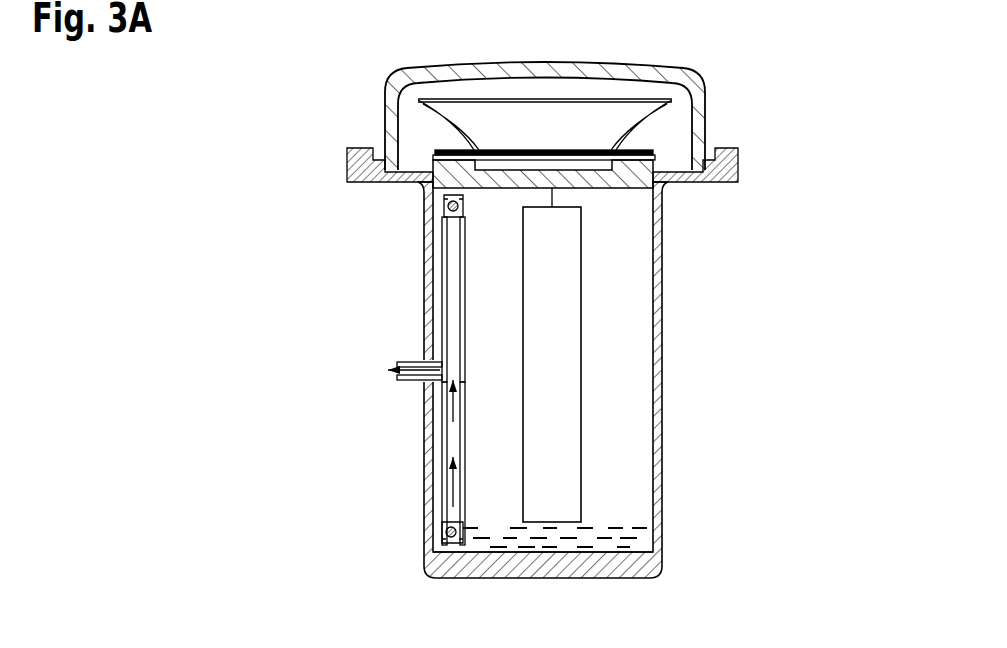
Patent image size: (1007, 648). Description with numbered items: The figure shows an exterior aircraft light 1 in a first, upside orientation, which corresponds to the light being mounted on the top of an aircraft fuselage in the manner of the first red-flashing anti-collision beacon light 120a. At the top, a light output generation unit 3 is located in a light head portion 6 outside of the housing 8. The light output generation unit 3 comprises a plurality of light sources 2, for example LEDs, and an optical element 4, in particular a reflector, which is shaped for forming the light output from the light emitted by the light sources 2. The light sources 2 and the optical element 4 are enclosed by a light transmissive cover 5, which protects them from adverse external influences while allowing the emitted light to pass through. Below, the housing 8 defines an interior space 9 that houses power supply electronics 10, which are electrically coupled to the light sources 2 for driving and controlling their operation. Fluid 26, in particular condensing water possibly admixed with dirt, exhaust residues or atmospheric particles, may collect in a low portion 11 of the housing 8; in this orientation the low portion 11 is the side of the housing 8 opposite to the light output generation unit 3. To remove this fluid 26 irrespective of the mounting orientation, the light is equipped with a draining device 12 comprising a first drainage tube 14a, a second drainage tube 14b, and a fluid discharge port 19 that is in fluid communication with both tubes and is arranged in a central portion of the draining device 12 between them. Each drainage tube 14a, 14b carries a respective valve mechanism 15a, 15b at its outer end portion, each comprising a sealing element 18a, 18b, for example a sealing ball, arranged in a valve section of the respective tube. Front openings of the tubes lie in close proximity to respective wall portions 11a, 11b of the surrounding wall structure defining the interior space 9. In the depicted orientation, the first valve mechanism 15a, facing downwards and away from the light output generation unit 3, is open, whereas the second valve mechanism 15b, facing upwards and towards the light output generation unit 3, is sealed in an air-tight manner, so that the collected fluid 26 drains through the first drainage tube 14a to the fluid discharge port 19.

The exterior aircraft light 1 is at (320, 497).
The light source 2 is at (473, 148).
The light output generation unit 3 is at (534, 95).
The optical element 4 is at (610, 118).
The light transmissive cover 5 is at (483, 70).
The light head portion 6 is at (711, 63).
The housing 8 is at (679, 367).
The interior space 9 is at (635, 240).
The power supply electronics 10 is at (565, 303).
The low portion 11 is at (673, 543).
The wall portion 11a is at (455, 563).
The wall portion 11b is at (447, 173).
The draining device 12 is at (480, 502).
The first drainage tube 14a is at (474, 458).
The second drainage tube 14b is at (474, 302).
The first valve mechanism 15a is at (430, 545).
The second valve mechanism 15b is at (434, 225).
The sealing element 18a is at (445, 532).
The sealing element 18b is at (447, 208).
The fluid discharge port 19 is at (405, 392).
The fluid 26 is at (635, 530).
The first red-flashing anti-collision beacon light 120a is at (760, 106).